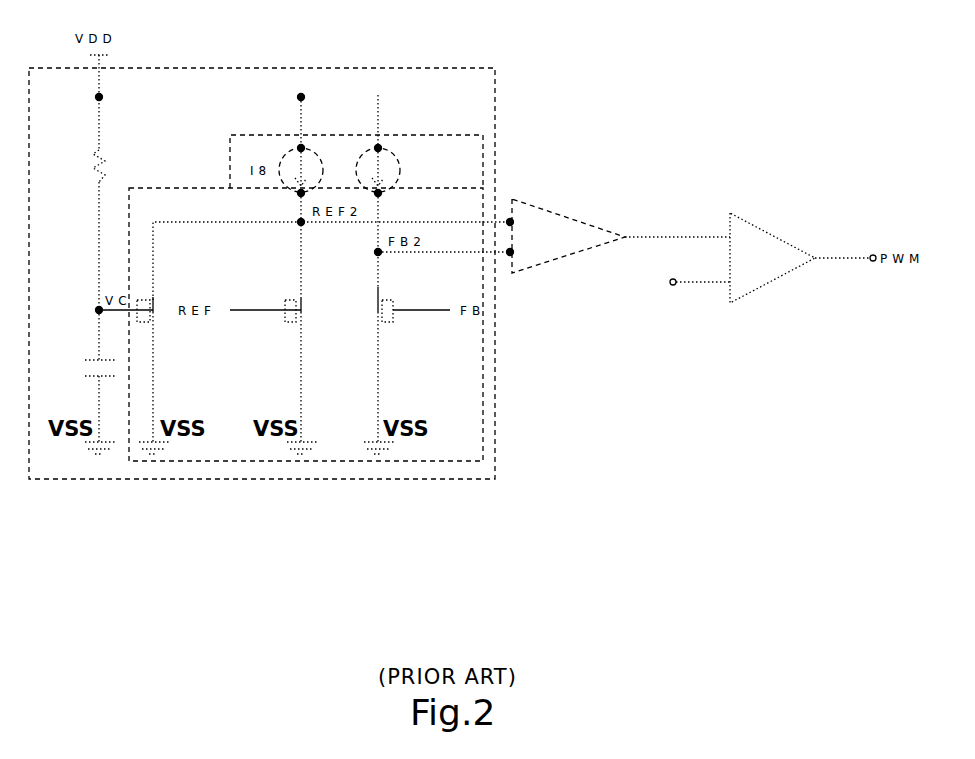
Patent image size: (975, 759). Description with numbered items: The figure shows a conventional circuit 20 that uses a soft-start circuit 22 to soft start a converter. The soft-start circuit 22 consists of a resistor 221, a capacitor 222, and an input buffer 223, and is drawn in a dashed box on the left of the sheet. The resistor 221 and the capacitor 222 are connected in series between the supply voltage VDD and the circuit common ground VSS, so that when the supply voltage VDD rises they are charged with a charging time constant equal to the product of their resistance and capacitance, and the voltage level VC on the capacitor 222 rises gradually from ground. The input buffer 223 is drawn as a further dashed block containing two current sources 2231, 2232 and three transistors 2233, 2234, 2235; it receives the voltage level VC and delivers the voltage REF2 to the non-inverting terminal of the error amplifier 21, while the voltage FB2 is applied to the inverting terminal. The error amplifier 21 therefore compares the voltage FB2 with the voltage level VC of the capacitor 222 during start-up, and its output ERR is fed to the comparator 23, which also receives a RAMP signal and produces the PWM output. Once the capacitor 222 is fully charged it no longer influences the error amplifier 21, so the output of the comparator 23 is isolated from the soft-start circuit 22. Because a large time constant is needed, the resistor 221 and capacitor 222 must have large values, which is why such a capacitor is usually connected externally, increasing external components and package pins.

The circuit 20 is at (701, 170).
The error amplifier 21 is at (581, 209).
The soft-start circuit 22 is at (508, 118).
The comparator 23 is at (781, 211).
The resistor 221 is at (123, 163).
The capacitor 222 is at (81, 340).
The input buffer 223 is at (222, 143).
The current source 2231 is at (258, 178).
The current source 2232 is at (402, 181).
The transistor 2233 is at (168, 328).
The transistor 2234 is at (308, 330).
The transistor 2235 is at (393, 327).